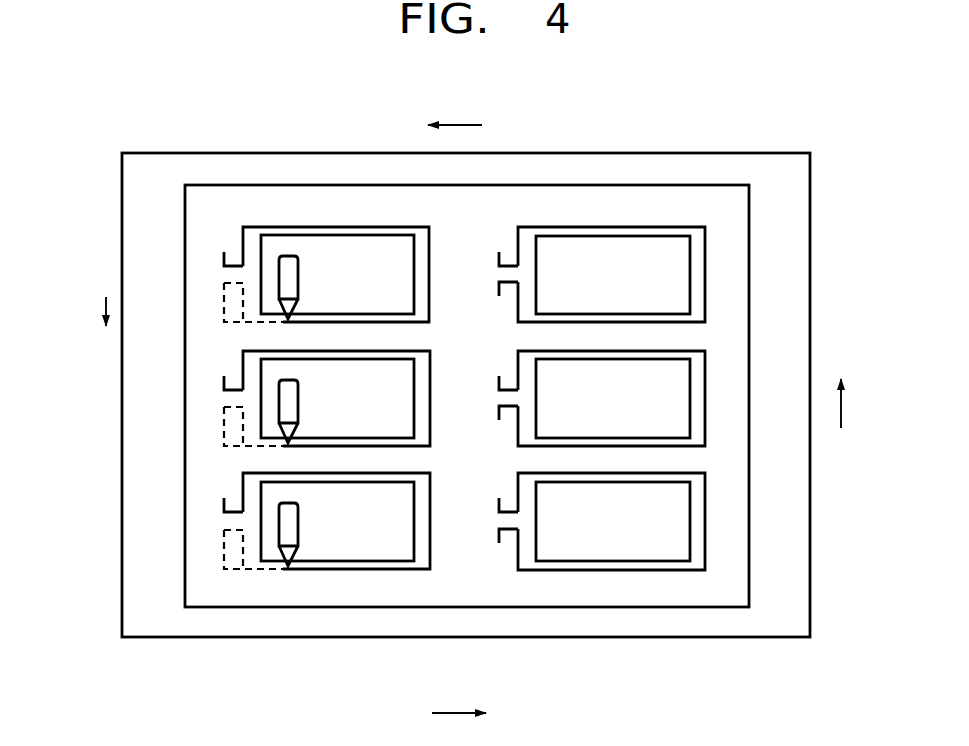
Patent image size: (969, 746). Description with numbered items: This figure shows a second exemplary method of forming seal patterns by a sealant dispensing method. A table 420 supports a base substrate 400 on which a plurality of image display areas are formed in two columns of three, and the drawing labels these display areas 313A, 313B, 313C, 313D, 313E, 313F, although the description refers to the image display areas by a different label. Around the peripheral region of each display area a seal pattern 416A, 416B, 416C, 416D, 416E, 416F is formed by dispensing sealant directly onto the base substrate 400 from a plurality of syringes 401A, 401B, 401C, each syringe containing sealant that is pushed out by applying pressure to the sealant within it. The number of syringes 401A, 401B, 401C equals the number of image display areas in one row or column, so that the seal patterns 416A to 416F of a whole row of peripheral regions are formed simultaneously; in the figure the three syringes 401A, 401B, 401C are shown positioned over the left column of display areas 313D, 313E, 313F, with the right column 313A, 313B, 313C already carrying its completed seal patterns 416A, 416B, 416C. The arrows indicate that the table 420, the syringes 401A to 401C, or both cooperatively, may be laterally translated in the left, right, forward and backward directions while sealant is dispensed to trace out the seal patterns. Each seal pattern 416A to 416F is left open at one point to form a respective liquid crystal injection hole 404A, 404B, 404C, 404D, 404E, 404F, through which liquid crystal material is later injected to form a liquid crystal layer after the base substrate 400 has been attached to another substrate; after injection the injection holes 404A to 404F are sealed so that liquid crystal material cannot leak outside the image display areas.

The base substrate 400 is at (737, 525).
The table 420 is at (788, 600).
The seal pattern 416A is at (605, 212).
The seal pattern 416B is at (637, 515).
The seal pattern 416C is at (685, 575).
The seal pattern 416D is at (235, 263).
The seal pattern 416E is at (235, 387).
The seal pattern 416F is at (235, 517).
The liquid crystal injection hole 404A is at (496, 273).
The liquid crystal injection hole 404B is at (495, 398).
The liquid crystal injection hole 404C is at (496, 521).
The liquid crystal injection hole 404D is at (221, 273).
The liquid crystal injection hole 404E is at (221, 395).
The liquid crystal injection hole 404F is at (221, 521).
The syringe 401A is at (283, 286).
The syringe 401B is at (283, 412).
The syringe 401C is at (283, 537).
The first display panel 313A is at (641, 287).
The second display panel 313B is at (641, 411).
The third display panel 313C is at (641, 534).
The fourth display panel 313D is at (370, 287).
The fifth display panel 313E is at (370, 411).
The sixth display panel 313F is at (370, 534).